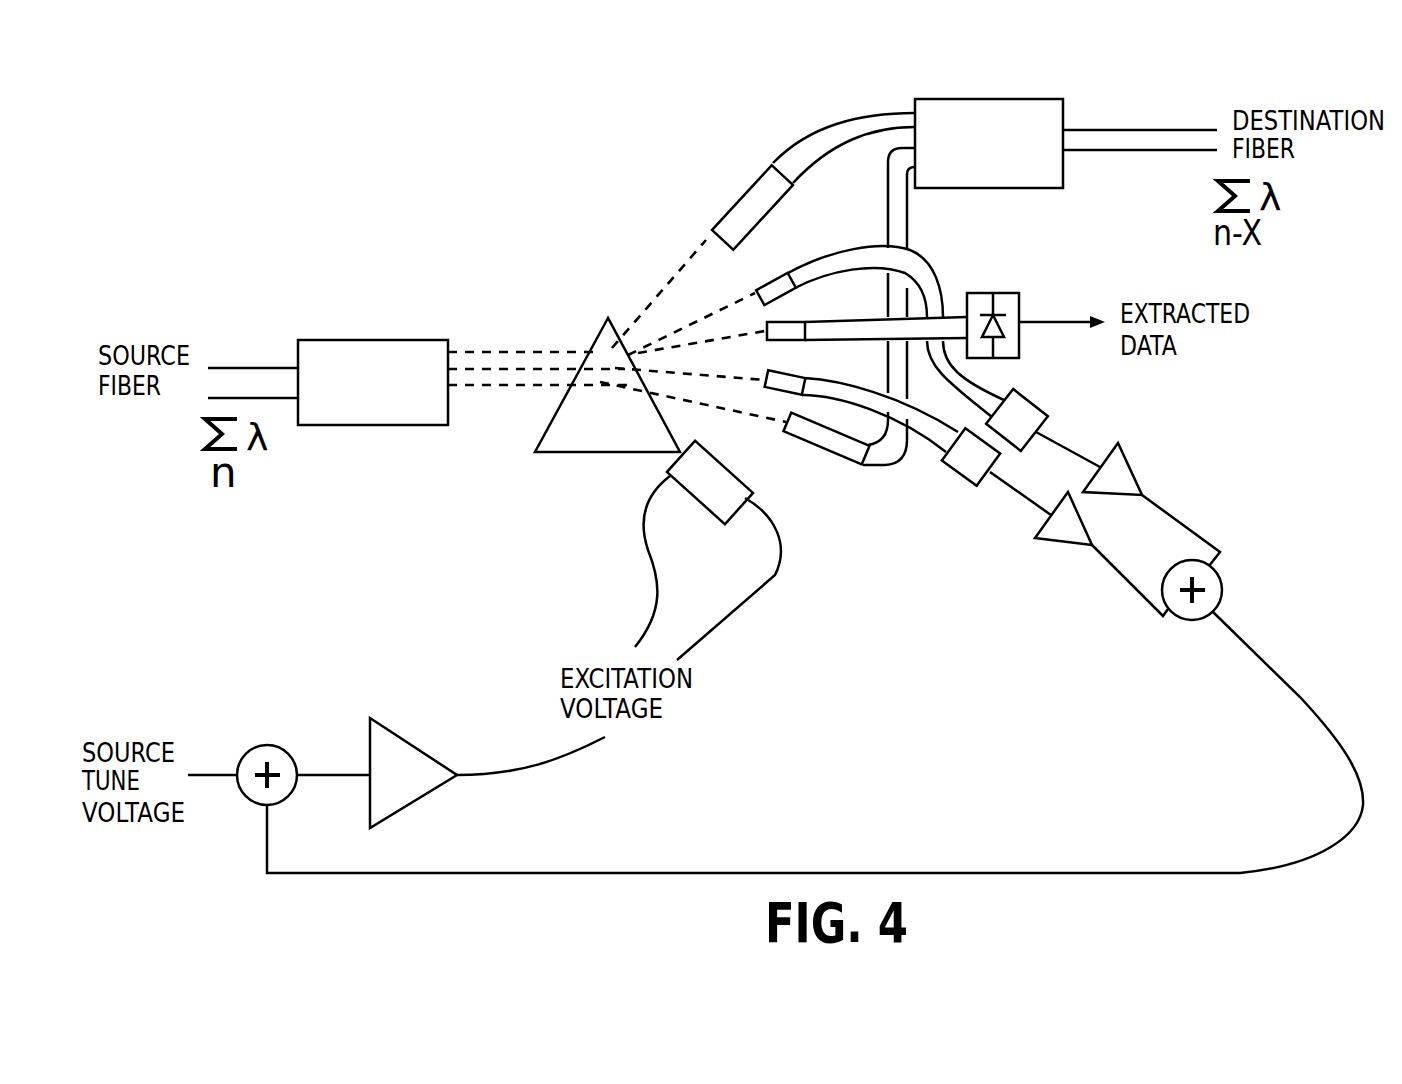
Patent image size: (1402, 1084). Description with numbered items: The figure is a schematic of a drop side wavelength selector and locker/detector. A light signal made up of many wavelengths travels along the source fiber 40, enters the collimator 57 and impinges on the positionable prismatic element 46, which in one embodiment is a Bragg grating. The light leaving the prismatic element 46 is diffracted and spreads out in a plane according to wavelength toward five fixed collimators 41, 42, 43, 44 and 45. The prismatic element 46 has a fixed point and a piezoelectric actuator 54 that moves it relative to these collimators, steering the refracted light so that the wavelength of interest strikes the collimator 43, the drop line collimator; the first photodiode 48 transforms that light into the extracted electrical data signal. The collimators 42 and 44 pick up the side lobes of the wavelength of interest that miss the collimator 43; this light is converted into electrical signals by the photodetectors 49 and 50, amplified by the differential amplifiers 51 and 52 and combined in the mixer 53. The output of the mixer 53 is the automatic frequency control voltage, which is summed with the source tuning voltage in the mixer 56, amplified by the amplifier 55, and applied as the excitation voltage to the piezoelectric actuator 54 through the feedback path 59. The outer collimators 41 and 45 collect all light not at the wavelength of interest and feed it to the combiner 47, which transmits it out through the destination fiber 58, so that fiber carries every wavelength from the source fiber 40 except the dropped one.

The source fiber 40 is at (251, 368).
The collimator 41 is at (805, 181).
The collimator 42 is at (877, 331).
The collimator 43 is at (852, 330).
The collimator 44 is at (861, 397).
The collimator 45 is at (846, 308).
The positionable prismatic element 46 is at (607, 385).
The combiner 47 is at (989, 124).
The photodiode #1 48 is at (992, 310).
The photodetector 49 is at (1043, 419).
The photodetector 50 is at (994, 471).
The differential amplifier 51 is at (1151, 501).
The differential amplifier 52 is at (1101, 554).
The mixer 53 is at (1208, 590).
The piezoelectric actuator 54 is at (710, 488).
The amplifier 55 is at (413, 766).
The mixer 56 is at (267, 755).
The collimator 57 is at (373, 367).
The destination fiber 58 is at (1140, 123).
The feedback line 59 is at (815, 742).